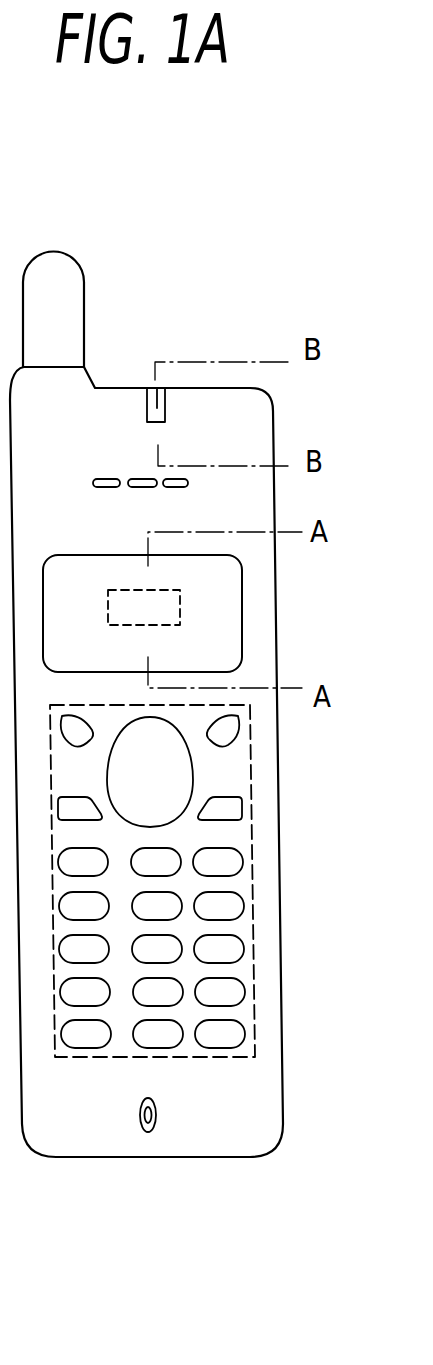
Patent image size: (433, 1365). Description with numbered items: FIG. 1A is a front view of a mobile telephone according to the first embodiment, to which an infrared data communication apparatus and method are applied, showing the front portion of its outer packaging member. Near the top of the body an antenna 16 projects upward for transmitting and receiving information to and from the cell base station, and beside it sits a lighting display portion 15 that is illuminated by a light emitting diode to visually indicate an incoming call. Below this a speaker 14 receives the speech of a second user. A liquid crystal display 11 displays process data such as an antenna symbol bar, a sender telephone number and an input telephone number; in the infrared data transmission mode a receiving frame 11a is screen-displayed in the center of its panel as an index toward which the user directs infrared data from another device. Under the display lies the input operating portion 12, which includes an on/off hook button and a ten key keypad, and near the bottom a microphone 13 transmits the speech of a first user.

The liquid crystal display 11 is at (222, 640).
The receiving frame 11a is at (180, 595).
The input operating portion 12 is at (251, 808).
The microphone 13 is at (157, 1117).
The speaker 14 is at (195, 482).
The lighting display portion 15 is at (157, 408).
The antenna 16 is at (80, 284).